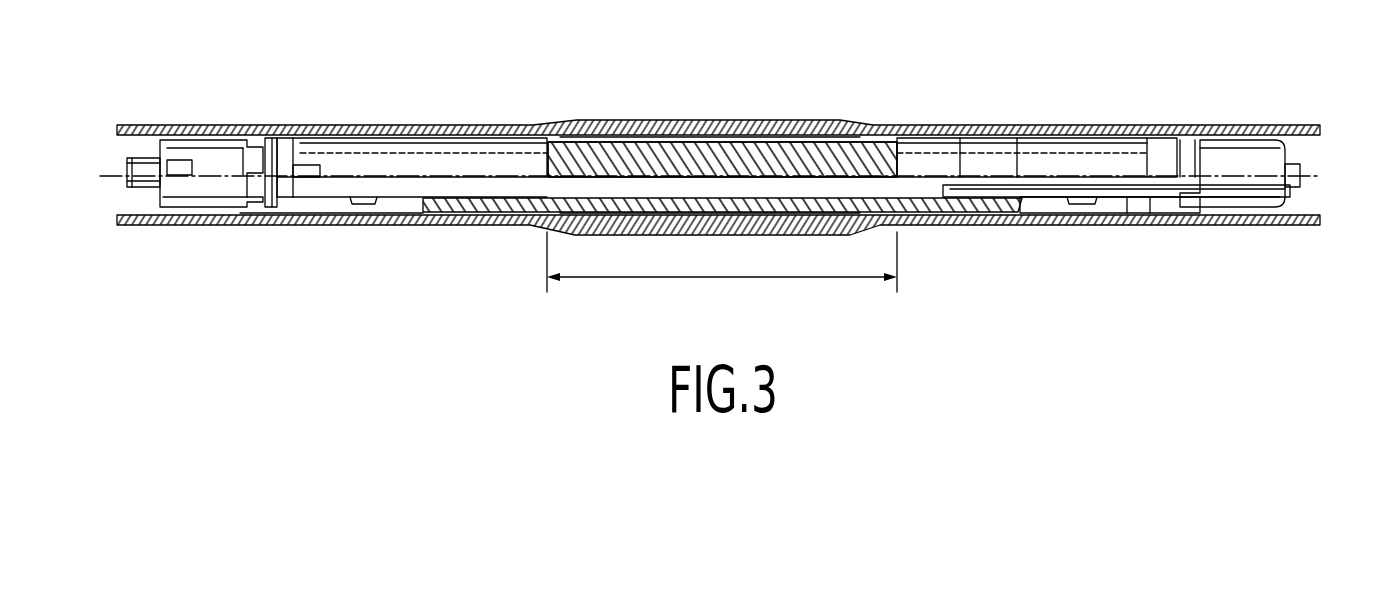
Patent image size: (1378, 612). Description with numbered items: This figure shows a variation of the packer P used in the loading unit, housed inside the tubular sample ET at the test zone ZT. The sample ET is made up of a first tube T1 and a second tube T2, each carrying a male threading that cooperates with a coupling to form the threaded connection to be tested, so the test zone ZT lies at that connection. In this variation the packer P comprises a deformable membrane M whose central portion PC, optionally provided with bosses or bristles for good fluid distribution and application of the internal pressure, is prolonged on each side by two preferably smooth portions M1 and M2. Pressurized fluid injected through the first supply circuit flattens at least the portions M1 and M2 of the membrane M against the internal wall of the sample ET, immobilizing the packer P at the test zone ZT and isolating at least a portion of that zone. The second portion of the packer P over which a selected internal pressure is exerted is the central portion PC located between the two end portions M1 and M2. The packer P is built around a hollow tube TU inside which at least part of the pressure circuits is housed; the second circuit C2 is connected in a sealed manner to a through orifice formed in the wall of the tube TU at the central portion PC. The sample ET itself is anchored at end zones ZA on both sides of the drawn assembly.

The tubular sample ET is at (1268, 118).
The anchoring zone ZA is at (139, 151).
The first tube T1 is at (252, 125).
The first end portion of the membrane M1 is at (392, 130).
The central portion of the membrane PC is at (718, 150).
The deformable membrane M is at (868, 150).
The second end portion of the membrane M2 is at (1067, 130).
The second tube T2 is at (1190, 125).
The packer P is at (225, 190).
The test zone ZT is at (703, 280).
The tube TU is at (1050, 210).
The second circuit C2 is at (1127, 193).